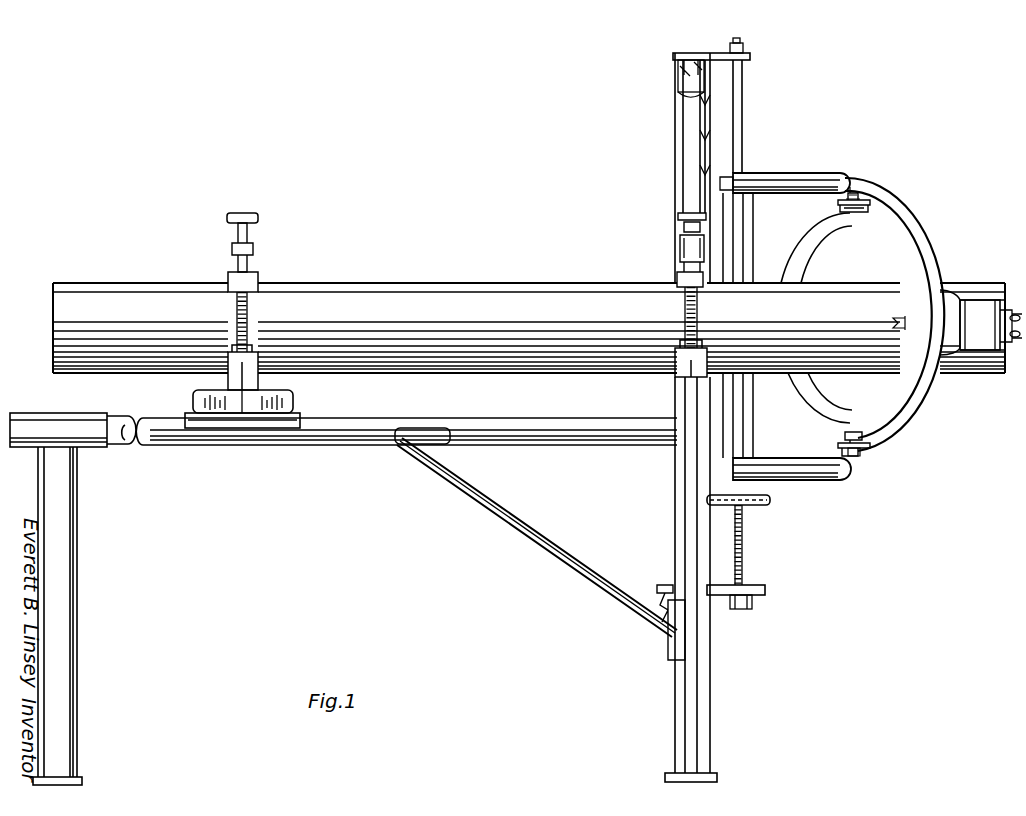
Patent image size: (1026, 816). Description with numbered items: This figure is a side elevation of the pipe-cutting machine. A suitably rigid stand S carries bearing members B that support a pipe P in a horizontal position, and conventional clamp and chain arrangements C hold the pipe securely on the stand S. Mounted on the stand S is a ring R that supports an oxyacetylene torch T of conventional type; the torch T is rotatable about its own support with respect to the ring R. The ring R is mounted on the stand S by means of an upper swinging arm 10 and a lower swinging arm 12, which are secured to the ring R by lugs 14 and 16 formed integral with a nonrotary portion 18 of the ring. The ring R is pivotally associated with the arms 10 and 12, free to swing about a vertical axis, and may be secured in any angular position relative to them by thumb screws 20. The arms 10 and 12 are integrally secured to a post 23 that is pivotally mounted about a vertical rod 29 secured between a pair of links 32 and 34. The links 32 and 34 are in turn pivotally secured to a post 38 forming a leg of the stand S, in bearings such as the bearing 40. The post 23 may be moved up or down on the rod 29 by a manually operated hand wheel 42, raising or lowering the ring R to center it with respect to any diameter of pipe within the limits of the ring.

The pipe P is at (513, 321).
The ring R is at (905, 205).
The oxyacetylene torch T is at (900, 323).
The clamp and chain arrangements C is at (232, 270).
The bearing members B is at (228, 382).
The stand S is at (400, 443).
The upper swinging arm 10 is at (813, 183).
The lower swinging arm 12 is at (805, 478).
The lug 14 is at (870, 200).
The lug 16 is at (847, 473).
The nonrotary portion of the ring 18 is at (912, 402).
The thumb screws 20 is at (845, 210).
The post 23 is at (735, 455).
The vertical rod 29 is at (740, 128).
The link 32 is at (712, 55).
The link 34 is at (715, 596).
The post 38 is at (683, 176).
The bearing 40 is at (676, 70).
The hand wheel 42 is at (768, 500).